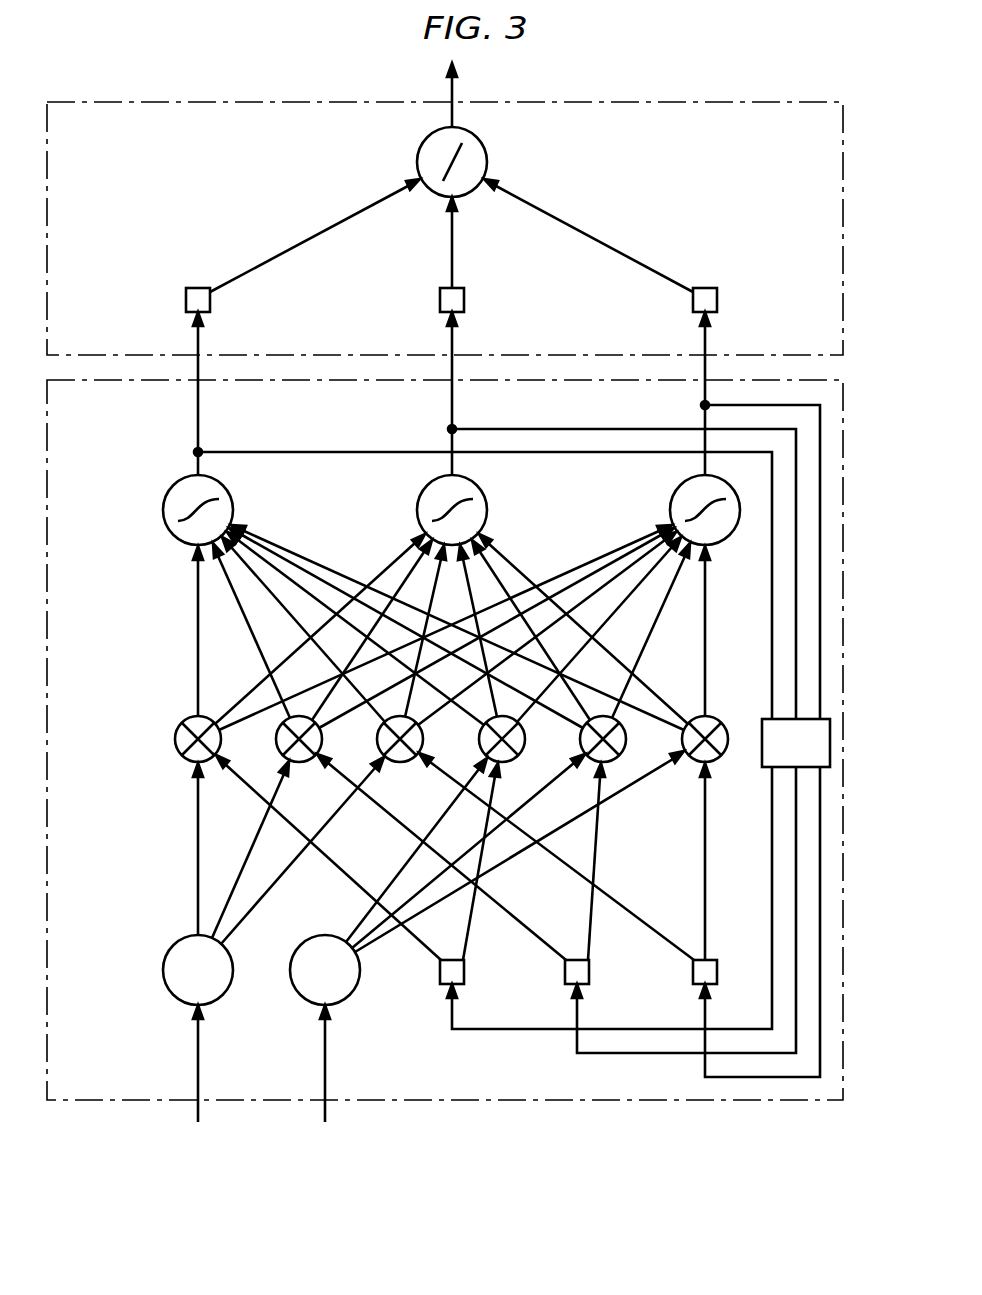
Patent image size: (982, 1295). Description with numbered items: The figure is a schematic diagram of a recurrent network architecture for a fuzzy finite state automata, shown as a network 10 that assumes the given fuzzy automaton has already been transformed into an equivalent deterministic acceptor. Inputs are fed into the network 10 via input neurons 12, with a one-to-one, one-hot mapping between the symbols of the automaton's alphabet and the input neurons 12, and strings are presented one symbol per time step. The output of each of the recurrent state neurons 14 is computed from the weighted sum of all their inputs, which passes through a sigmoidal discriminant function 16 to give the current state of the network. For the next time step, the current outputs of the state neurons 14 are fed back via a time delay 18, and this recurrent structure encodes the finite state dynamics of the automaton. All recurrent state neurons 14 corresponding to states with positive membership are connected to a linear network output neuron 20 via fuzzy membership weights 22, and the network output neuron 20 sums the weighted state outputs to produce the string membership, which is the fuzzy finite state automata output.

The network 10 is at (870, 442).
The input neurons 12 is at (228, 995).
The recurrent state neurons 14 is at (232, 495).
The sigmoidal discriminant function 16 is at (186, 757).
The time delay 18 is at (762, 722).
The network output neuron 20 is at (486, 170).
The fuzzy membership weights 22 is at (210, 306).